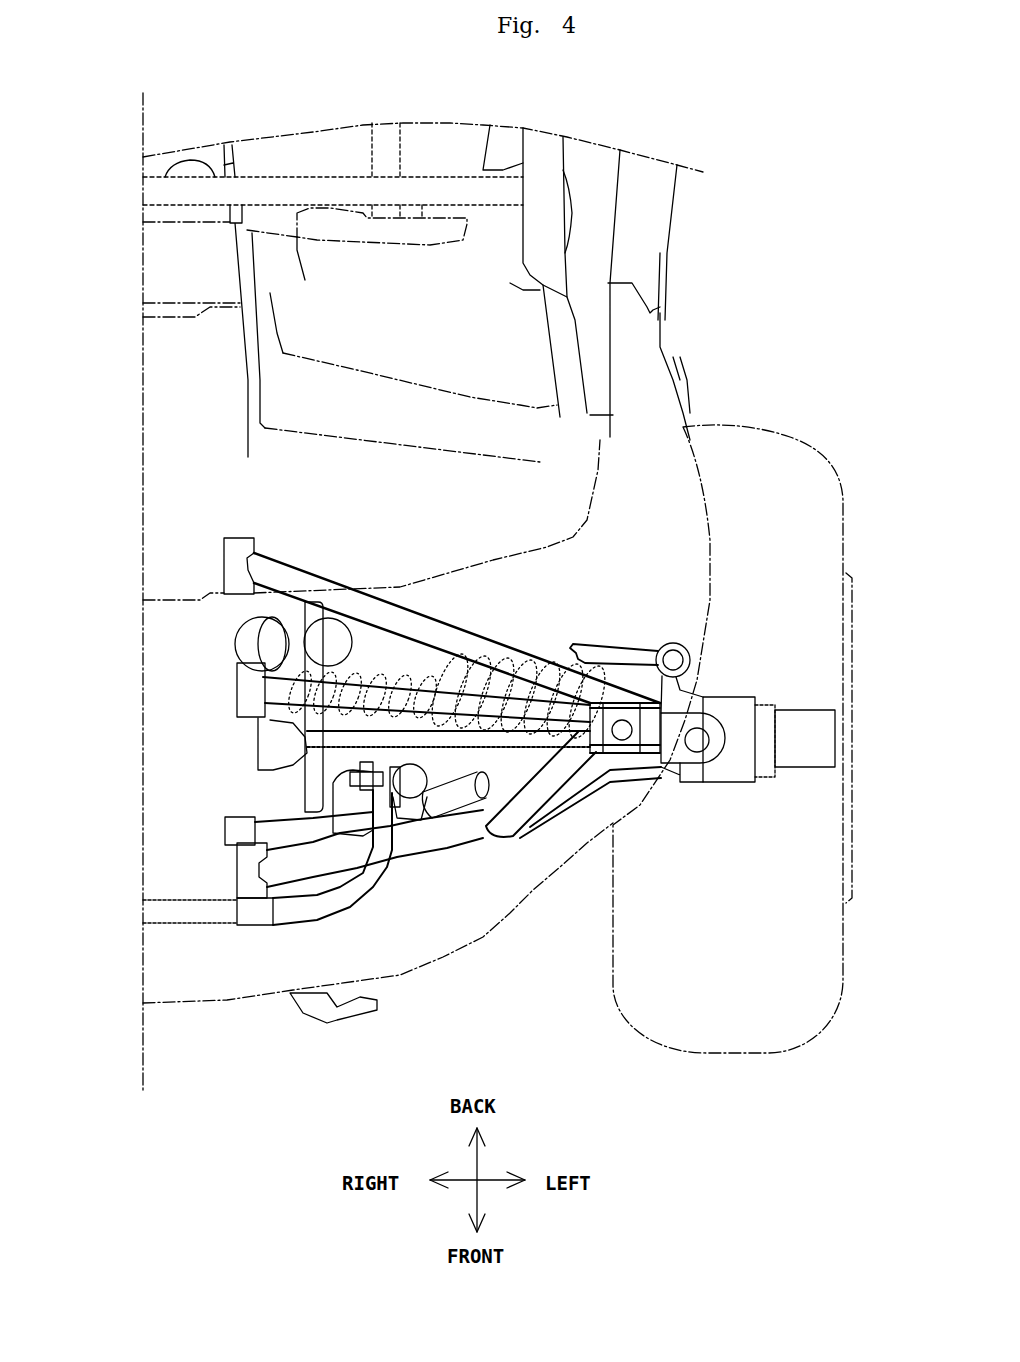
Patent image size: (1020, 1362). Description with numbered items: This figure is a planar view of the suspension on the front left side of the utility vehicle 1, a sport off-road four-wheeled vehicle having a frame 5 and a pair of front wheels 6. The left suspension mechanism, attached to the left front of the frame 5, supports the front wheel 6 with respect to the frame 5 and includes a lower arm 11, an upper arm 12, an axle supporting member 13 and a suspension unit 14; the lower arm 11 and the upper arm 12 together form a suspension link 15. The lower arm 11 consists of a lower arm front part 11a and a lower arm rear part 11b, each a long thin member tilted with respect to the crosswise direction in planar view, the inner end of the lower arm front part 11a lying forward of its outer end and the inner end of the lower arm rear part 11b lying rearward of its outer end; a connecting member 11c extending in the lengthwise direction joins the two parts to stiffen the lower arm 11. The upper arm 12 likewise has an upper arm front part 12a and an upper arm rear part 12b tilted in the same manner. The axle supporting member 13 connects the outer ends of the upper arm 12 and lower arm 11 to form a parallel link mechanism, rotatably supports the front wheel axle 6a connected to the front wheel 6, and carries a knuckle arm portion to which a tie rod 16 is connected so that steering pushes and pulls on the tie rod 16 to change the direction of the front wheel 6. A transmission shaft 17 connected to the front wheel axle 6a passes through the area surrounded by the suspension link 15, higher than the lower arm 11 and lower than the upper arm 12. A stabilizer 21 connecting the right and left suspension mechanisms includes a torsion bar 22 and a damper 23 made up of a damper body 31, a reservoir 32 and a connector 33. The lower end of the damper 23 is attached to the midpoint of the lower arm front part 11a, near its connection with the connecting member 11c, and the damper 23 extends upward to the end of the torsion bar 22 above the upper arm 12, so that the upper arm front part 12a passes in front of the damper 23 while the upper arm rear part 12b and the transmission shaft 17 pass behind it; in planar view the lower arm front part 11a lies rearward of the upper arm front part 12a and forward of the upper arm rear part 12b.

The utility vehicle 1 is at (150, 1218).
The frame 5 is at (213, 1003).
The front wheel 6 is at (717, 1055).
The front wheel axle 6a is at (812, 717).
The lower arm 11 is at (416, 746).
The lower arm front part 11a is at (573, 800).
The lower arm rear part 11b is at (410, 613).
The connecting member 11c is at (312, 777).
The upper arm 12 is at (461, 806).
The upper arm front part 12a is at (580, 793).
The upper arm rear part 12b is at (500, 660).
The axle supporting member 13 is at (740, 762).
The suspension unit 14 is at (222, 645).
The suspension link 15 is at (667, 823).
The tie rod 16 is at (607, 653).
The transmission shaft 17 is at (353, 742).
The stabilizer 21 is at (112, 950).
The torsion bar 22 is at (173, 912).
The damper 23 is at (357, 842).
The damper body 31 is at (339, 839).
The reservoir 32 is at (397, 828).
The connector 33 is at (450, 803).